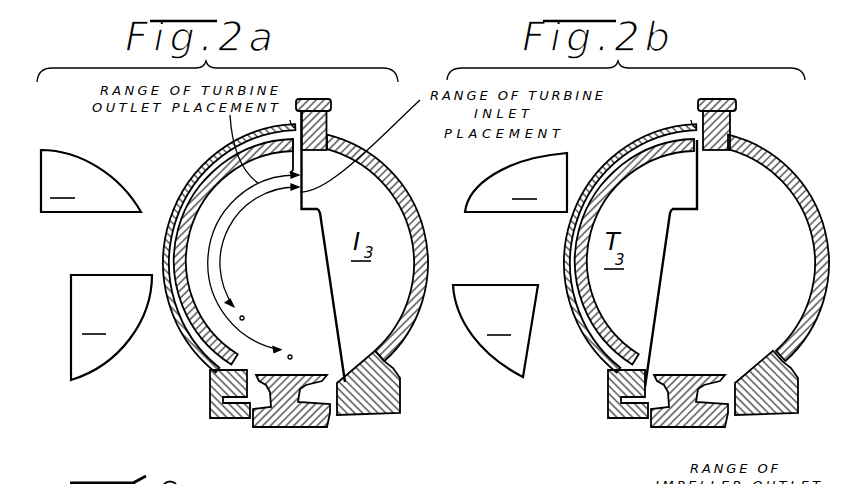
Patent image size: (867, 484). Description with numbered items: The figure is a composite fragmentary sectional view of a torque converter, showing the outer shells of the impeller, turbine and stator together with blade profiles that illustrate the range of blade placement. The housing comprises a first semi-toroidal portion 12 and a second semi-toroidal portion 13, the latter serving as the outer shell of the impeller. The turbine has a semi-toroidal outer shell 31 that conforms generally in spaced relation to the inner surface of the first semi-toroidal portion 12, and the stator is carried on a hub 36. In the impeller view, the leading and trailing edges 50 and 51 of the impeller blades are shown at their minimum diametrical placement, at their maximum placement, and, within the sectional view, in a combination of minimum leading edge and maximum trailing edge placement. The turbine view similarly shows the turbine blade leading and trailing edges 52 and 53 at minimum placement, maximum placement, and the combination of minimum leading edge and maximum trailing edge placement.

In FIG. 2a, the first semi-toroidal portion 12 is at (190, 346).
In FIG. 2a, the second semi-toroidal portion 13 is at (379, 165).
In FIG. 2a, the semi-toroidal outer shell 31 is at (220, 158).
In FIG. 2a, the hub 36 is at (285, 376).
In FIG. 2a, the leading edge 50 is at (74, 215).
In FIG. 2a, the trailing edge 51 is at (42, 153).
In FIG. 2b, the leading edge 52 is at (569, 156).
In FIG. 2b, the trailing edge 53 is at (483, 214).